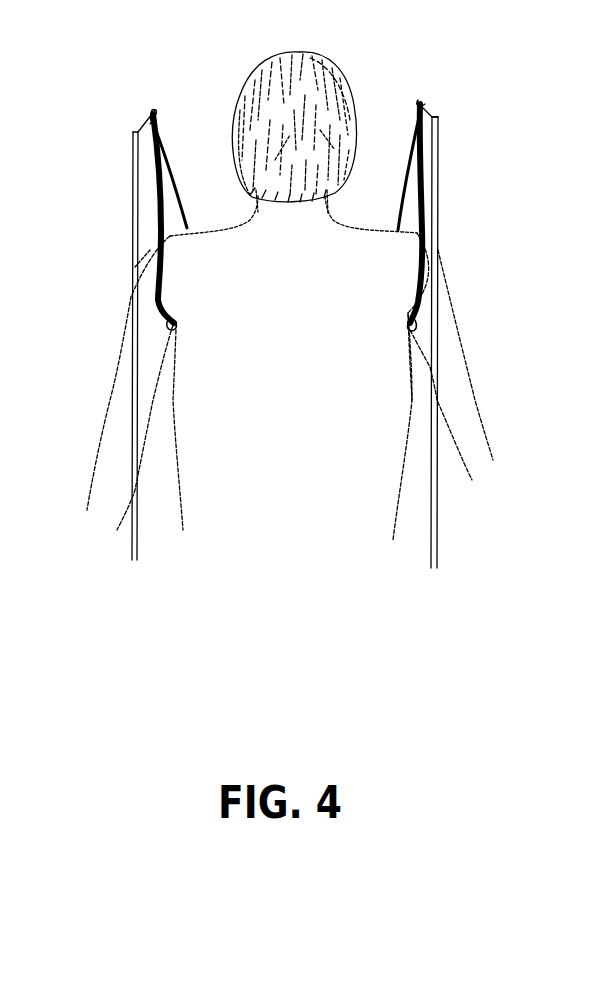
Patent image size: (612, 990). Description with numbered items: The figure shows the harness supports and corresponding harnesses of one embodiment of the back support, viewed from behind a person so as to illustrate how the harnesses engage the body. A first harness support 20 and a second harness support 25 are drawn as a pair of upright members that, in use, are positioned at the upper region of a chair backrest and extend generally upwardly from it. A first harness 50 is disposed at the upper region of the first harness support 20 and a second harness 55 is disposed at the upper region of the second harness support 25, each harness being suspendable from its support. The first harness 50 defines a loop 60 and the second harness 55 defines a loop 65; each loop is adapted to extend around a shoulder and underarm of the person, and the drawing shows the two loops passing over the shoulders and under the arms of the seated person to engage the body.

The first harness support 20 is at (133, 242).
The second harness support 25 is at (433, 238).
The first harness 50 is at (150, 146).
The second harness 55 is at (433, 150).
The loop 60 is at (180, 193).
The loop 65 is at (402, 192).